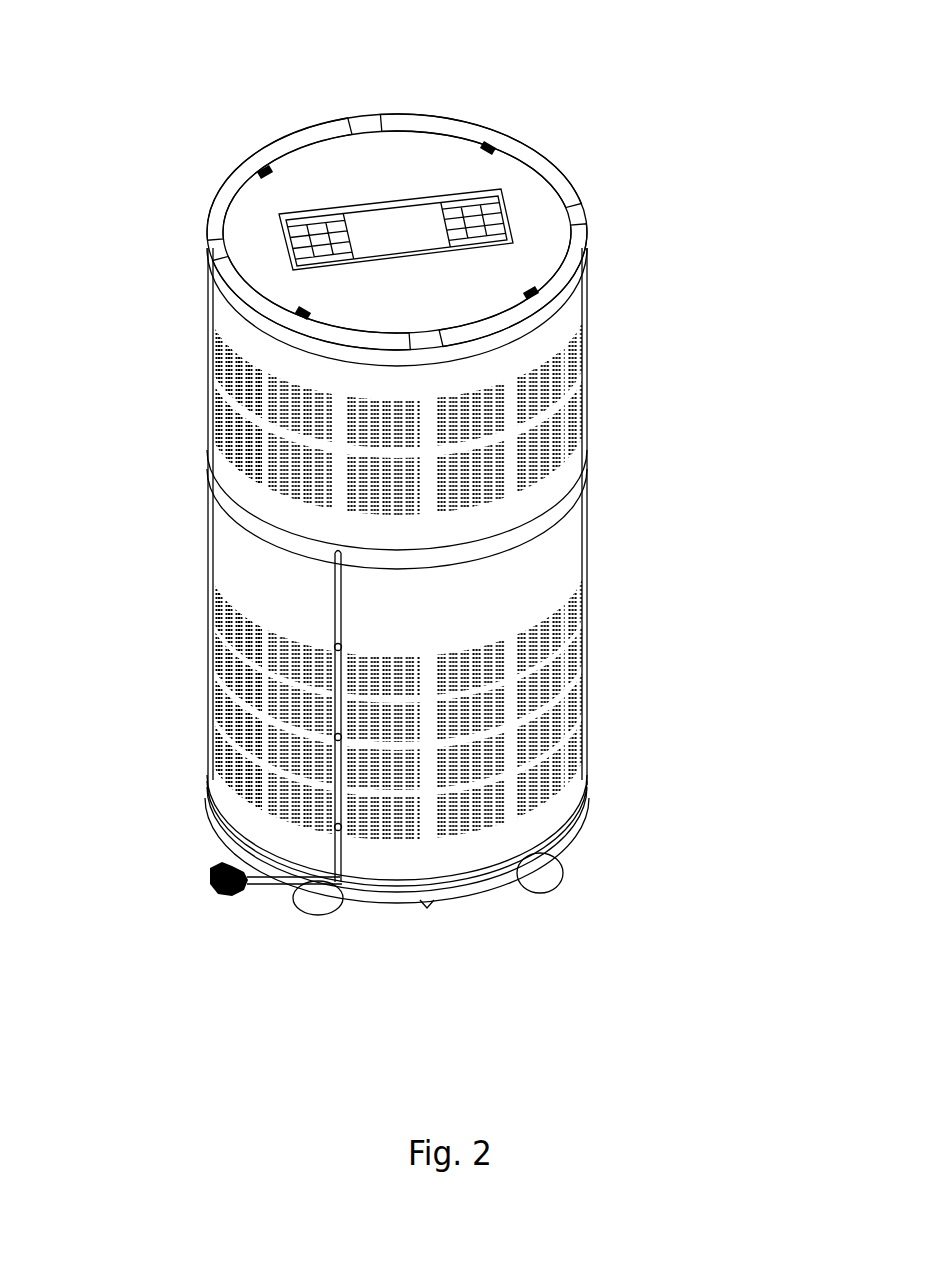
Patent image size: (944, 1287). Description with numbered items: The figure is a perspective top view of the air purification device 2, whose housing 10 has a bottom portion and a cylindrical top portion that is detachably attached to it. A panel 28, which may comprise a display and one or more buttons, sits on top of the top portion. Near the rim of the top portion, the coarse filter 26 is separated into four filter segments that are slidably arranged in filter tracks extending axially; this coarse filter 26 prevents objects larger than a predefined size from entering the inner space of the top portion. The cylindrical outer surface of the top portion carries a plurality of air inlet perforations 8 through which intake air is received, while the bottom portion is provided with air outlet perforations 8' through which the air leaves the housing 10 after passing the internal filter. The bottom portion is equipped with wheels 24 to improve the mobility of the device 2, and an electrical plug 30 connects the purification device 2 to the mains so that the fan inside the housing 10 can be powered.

The air purification device 2 is at (223, 106).
The air inlet perforations 8 is at (465, 405).
The air outlet perforations 8' is at (469, 711).
The housing 10 is at (582, 525).
The wheels 24 is at (543, 893).
The coarse filter 26 is at (538, 152).
The panel 28 is at (385, 204).
The electrical plug 30 is at (218, 887).